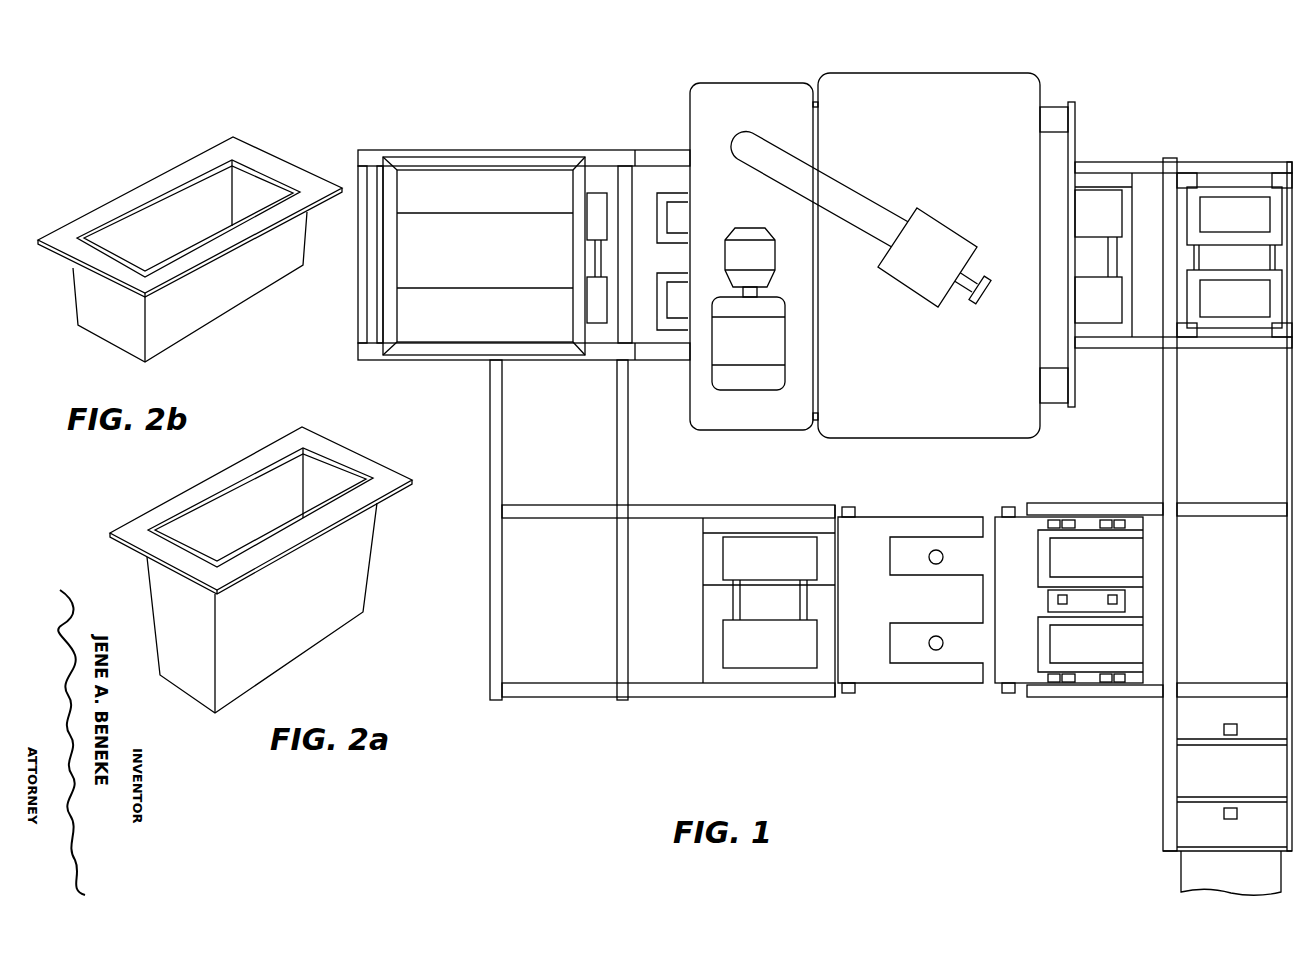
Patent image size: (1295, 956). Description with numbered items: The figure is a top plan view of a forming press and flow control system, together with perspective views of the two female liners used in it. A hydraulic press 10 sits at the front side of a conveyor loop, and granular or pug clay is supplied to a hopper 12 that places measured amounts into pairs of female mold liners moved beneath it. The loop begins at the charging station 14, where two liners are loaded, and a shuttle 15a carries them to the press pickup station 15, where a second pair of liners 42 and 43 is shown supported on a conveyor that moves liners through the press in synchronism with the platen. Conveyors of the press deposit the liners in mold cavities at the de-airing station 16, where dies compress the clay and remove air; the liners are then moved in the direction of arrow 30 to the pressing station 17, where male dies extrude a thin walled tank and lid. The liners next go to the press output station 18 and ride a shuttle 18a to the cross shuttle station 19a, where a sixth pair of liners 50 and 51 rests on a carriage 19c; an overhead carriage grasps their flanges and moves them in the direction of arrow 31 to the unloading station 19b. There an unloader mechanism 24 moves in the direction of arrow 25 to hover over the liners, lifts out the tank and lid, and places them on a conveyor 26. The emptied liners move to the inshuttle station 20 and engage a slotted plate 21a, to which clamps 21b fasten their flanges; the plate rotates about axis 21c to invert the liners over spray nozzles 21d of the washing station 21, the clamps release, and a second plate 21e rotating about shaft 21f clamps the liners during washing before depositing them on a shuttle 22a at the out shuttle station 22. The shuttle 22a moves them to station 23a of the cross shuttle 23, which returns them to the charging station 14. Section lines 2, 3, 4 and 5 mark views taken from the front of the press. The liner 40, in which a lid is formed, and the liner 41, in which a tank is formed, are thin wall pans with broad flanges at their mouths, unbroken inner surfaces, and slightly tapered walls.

In FIG. 1, the hydraulic press 10 is at (895, 356).
In FIG. 1, the hopper 12 is at (492, 274).
In FIG. 1, the charging station 14 is at (522, 141).
In FIG. 1, the press pickup station 15 is at (667, 141).
In FIG. 1, the shuttle 15a is at (600, 203).
In FIG. 1, the de-airing station 16 is at (757, 71).
In FIG. 1, the pressing station 17 is at (919, 66).
In FIG. 1, the press output station 18 is at (1119, 127).
In FIG. 1, the shuttle 18a is at (1120, 183).
In FIG. 1, the cross shuttle station 19a is at (1247, 269).
In FIG. 1, the unloading station 19b is at (1240, 630).
In FIG. 1, the carriage 19c is at (1287, 173).
In FIG. 1, the inshuttle station 20 is at (1098, 736).
In FIG. 1, the washing station 21 is at (922, 736).
In FIG. 1, the slotted plate 21a is at (1032, 611).
In FIG. 1, the clamps 21b is at (1110, 530).
In FIG. 1, the axis 21c is at (1007, 693).
In FIG. 1, the spray nozzles 21d is at (937, 564).
In FIG. 1, the second plate 21e is at (876, 611).
In FIG. 1, the shaft 21f is at (847, 507).
In FIG. 1, the out shuttle station 22 is at (785, 739).
In FIG. 1, the shuttle 22a is at (783, 657).
In FIG. 1, the cross shuttle station 23 is at (558, 739).
In FIG. 1, the station 23a is at (568, 611).
In FIG. 1, the unloader mechanism 24 is at (1204, 790).
In FIG. 1, the arrow 25 is at (1263, 786).
In FIG. 1, the conveyor 26 is at (1246, 862).
In FIG. 1, the arrow 30 is at (955, 147).
In FIG. 1, the arrow 31 is at (1233, 432).
In FIG. 2B, the female liner 40 is at (230, 303).
In FIG. 2A, the second liner 41 is at (308, 632).
In FIG. 1, the liner 42 is at (678, 205).
In FIG. 1, the liner 43 is at (678, 287).
In FIG. 1, the liner 50 is at (1244, 227).
In FIG. 1, the liner 51 is at (1244, 311).
In FIG. 1, the line 2— 2 is at (358, 122).
In FIG. 1, the section line FIG. 3 is at (1277, 72).
In FIG. 1, the section line FIG. 4 is at (350, 858).
In FIG. 1, the section line FIG. 5 is at (350, 90).